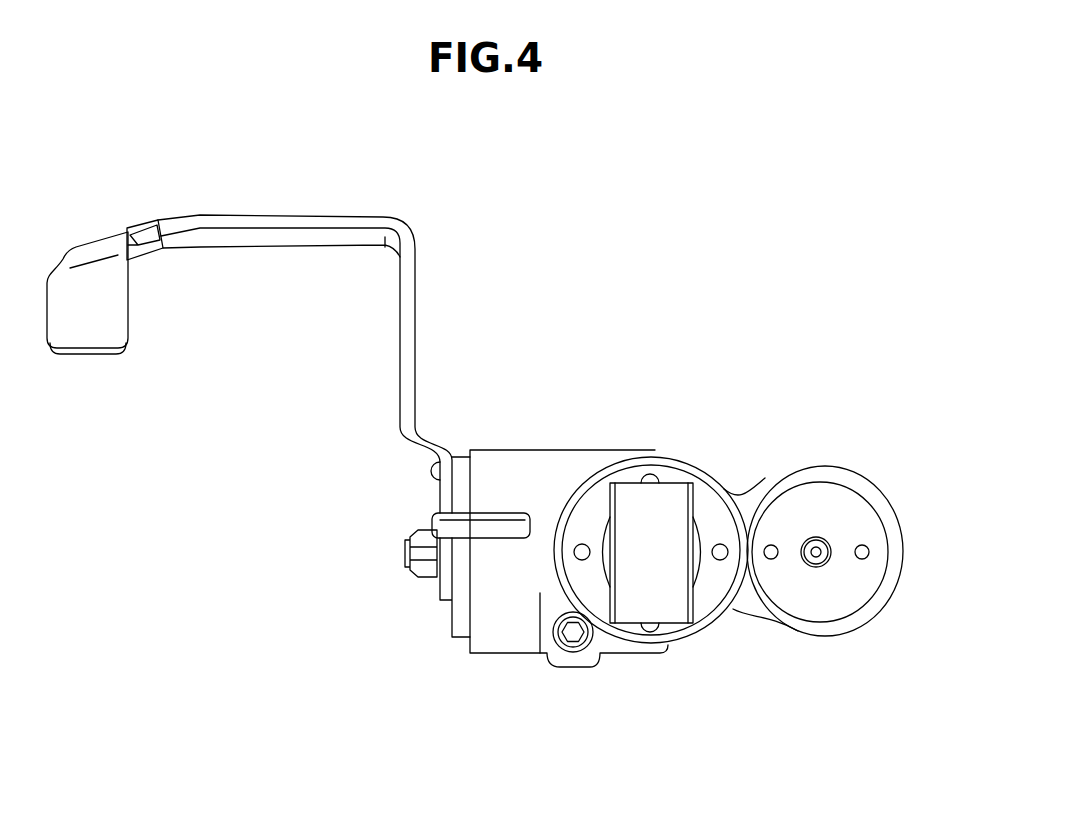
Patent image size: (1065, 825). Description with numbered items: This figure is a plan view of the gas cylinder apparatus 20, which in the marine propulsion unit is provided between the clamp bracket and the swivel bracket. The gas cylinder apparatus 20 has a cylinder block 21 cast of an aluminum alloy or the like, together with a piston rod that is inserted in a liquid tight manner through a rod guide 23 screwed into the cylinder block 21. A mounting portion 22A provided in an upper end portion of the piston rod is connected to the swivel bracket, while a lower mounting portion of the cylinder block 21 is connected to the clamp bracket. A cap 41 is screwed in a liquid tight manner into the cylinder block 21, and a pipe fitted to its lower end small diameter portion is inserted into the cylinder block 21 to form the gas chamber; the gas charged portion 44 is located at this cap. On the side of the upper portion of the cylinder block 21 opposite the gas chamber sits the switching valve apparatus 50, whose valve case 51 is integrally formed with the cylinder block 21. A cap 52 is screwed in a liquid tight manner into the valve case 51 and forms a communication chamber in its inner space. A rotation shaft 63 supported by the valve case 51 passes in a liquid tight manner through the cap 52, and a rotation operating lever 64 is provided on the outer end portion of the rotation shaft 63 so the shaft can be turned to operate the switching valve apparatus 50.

The gas cylinder apparatus 20 is at (745, 530).
The cylinder block 21 is at (703, 633).
The mounting portion 22A is at (677, 610).
The rod guide 23 is at (703, 503).
The cap 41 is at (833, 503).
The gas charged portion 44 is at (830, 540).
The switching valve apparatus 50 is at (496, 596).
The valve case 51 is at (503, 643).
The cap 52 is at (453, 620).
The rotation shaft 63 is at (410, 538).
The rotation operating lever 64 is at (112, 310).